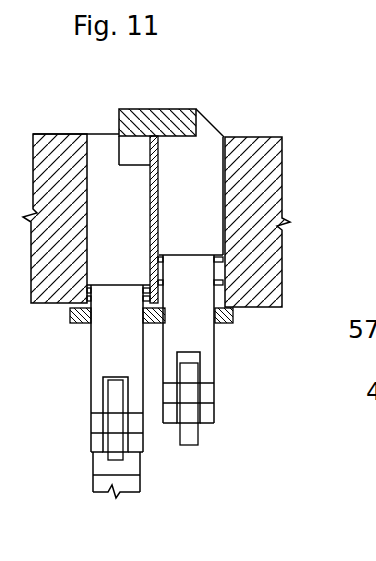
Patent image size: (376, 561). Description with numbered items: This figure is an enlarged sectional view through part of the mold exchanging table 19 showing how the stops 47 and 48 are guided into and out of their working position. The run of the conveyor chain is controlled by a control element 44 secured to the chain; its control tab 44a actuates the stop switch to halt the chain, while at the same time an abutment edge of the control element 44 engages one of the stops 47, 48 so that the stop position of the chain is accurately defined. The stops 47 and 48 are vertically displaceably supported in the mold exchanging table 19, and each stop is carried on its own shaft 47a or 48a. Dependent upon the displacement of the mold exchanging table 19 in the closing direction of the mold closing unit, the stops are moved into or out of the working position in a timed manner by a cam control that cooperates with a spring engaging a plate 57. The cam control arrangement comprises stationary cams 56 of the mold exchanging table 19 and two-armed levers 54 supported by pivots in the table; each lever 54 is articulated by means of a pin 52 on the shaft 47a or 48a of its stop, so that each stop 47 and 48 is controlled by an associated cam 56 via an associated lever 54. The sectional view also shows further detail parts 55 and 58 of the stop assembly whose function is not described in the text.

The mold exchanging table 19 is at (288, 153).
The control element 44 is at (142, 104).
The control tab 44a is at (178, 90).
The stop 47 is at (193, 158).
The shaft 47a is at (205, 353).
The stop 48 is at (106, 179).
The shaft 48a is at (112, 343).
The pin 52 is at (101, 420).
The lever 54 is at (192, 443).
The pin end 55 is at (113, 447).
The stationary cam 56 is at (122, 473).
The plate 57 is at (233, 320).
The seal 58 is at (218, 282).